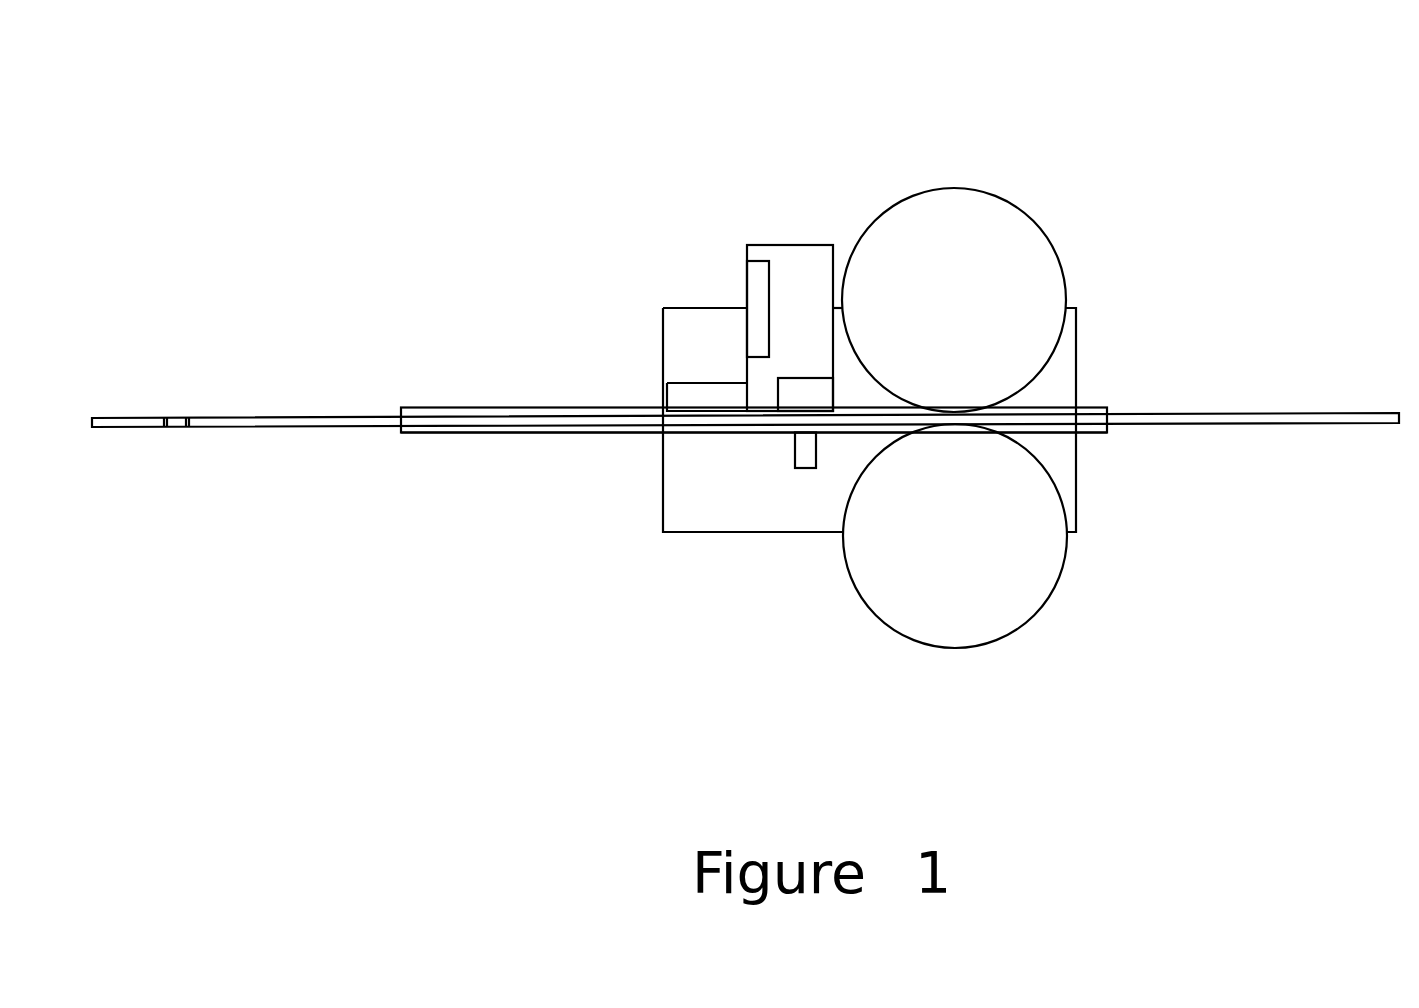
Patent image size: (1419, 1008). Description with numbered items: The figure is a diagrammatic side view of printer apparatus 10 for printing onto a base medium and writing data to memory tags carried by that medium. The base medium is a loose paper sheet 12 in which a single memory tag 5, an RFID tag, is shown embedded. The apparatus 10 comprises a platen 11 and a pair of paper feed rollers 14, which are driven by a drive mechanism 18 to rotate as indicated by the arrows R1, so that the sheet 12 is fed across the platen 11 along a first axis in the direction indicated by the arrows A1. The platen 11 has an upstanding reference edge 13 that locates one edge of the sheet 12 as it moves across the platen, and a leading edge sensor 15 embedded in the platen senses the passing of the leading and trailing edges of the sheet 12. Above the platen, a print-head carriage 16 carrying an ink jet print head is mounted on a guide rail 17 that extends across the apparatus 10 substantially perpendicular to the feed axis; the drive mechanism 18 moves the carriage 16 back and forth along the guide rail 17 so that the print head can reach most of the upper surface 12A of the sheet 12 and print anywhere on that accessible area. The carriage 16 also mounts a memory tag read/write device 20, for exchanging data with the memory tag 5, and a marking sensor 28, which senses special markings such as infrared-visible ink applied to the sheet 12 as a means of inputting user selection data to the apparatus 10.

The apparatus 10 is at (350, 140).
The sheet 12 is at (301, 449).
The upper surface 12A is at (352, 417).
The memory tag 5 is at (168, 433).
The reference edge 13 is at (520, 404).
The platen 11 is at (448, 435).
The memory tag read/write device 20 is at (680, 386).
The drive mechanism 18 is at (670, 487).
The print-head carriage 16 is at (803, 243).
The guide rail 17 is at (753, 278).
The marking sensor 28 is at (803, 399).
The leading edge sensor 15 is at (808, 455).
The paper feed rollers 14 is at (1067, 285).
The rotation direction arrows R1 is at (946, 155).
The feed direction arrows A1 is at (120, 386).